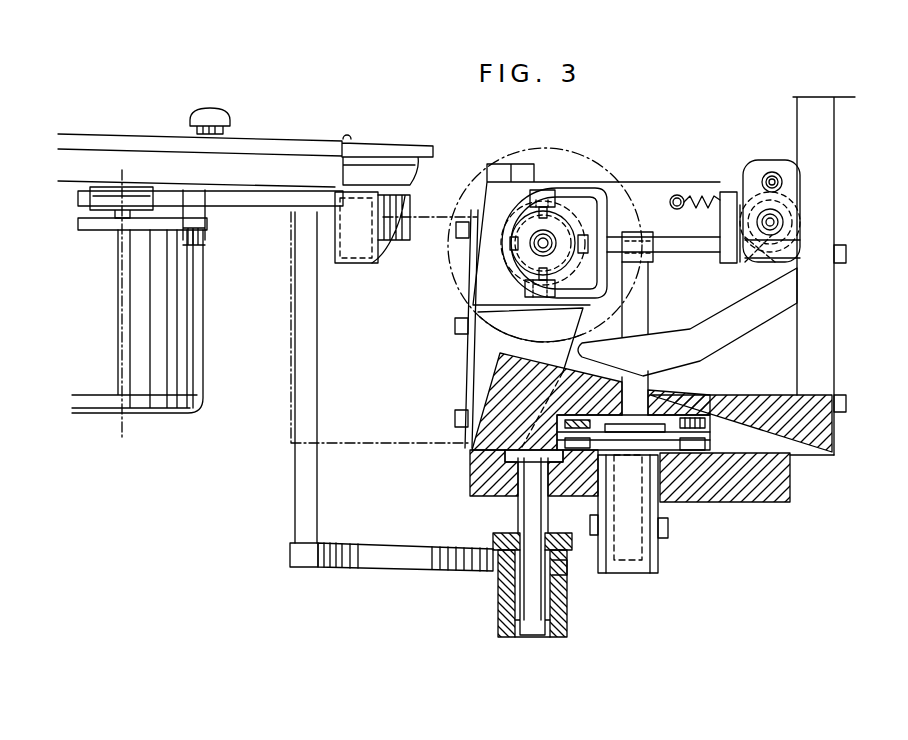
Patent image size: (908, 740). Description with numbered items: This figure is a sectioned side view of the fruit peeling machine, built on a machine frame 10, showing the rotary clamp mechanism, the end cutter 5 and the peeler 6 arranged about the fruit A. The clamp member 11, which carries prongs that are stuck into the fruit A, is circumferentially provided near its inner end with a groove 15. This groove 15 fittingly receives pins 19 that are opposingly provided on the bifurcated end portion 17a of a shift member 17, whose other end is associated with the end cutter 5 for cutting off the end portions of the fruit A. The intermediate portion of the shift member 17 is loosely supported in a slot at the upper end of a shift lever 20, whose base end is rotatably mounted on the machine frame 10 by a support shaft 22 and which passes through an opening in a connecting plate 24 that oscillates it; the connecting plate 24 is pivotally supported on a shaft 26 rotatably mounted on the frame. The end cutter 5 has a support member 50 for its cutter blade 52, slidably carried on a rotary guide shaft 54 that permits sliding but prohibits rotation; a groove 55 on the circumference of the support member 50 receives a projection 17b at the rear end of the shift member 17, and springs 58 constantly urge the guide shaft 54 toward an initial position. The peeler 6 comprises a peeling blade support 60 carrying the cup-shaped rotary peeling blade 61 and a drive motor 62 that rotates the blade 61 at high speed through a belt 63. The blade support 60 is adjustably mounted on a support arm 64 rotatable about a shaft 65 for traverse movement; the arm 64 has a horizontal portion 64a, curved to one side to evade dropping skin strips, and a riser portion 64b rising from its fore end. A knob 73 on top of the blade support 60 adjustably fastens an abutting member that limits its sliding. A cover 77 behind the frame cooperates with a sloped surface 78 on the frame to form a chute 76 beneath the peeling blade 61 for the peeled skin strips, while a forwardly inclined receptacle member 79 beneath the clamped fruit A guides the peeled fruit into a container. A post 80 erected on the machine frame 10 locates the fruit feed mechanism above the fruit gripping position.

The end cutter 5 is at (768, 350).
The peeler 6 is at (288, 92).
The machine frame 10 is at (632, 195).
The clamp member 11 is at (522, 262).
The groove 15 is at (522, 233).
The shift member 17 is at (672, 252).
The bifurcated end portion 17a is at (604, 212).
The projection 17b is at (747, 260).
The pins 19 is at (537, 211).
The shift lever 20 is at (645, 326).
The support shaft 22 is at (664, 533).
The connecting plate 24 is at (670, 415).
The shaft 26 is at (657, 560).
The support member 50 is at (793, 233).
The cutter blade 52 is at (712, 340).
The rotary guide shaft 54 is at (768, 224).
The groove 55 is at (800, 246).
The springs 58 is at (714, 192).
The peeling blade support 60 is at (303, 160).
The cup-shaped rotary peeling blade 61 is at (397, 236).
The drive motor 62 is at (190, 353).
The belt 63 is at (253, 200).
The support arm 64 is at (311, 572).
The horizontal portion 64a is at (413, 562).
The riser portion 64b is at (298, 487).
The shaft 65 is at (530, 514).
The knob 73 is at (213, 113).
The opening 76 is at (375, 361).
The cover 77 is at (293, 302).
The sloped surface 78 is at (492, 378).
The receptacle member 79 is at (763, 420).
The post 80 is at (837, 112).
The fruit A is at (556, 149).